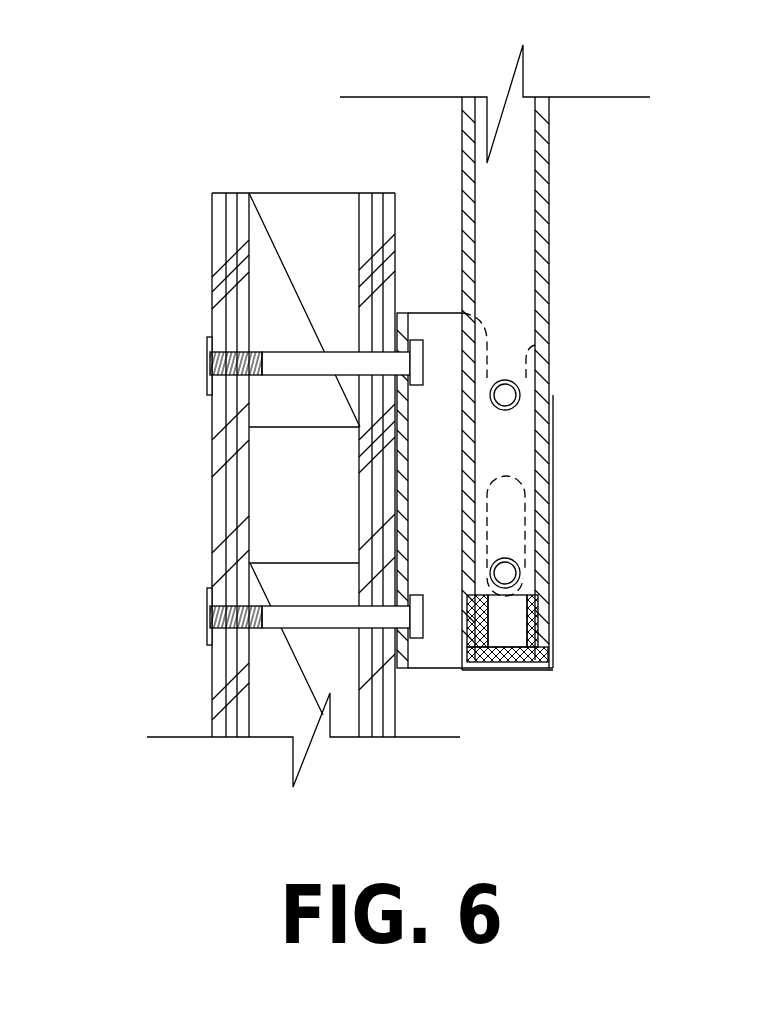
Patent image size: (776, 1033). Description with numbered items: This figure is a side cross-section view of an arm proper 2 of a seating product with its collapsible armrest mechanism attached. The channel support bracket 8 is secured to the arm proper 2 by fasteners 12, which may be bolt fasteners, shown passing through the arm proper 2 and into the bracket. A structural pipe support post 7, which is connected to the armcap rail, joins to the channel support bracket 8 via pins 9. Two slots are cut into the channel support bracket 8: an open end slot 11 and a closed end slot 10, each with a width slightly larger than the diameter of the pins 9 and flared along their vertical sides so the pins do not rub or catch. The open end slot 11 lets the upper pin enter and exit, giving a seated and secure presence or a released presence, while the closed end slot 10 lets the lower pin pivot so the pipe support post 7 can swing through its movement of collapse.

The arm proper 2 is at (282, 302).
The structural pipe support post 7 is at (547, 185).
The channel support bracket 8 is at (438, 655).
The pins 9 is at (505, 557).
The closed end slot 10 is at (525, 537).
The open end slot 11 is at (523, 365).
The fasteners 12 is at (302, 363).